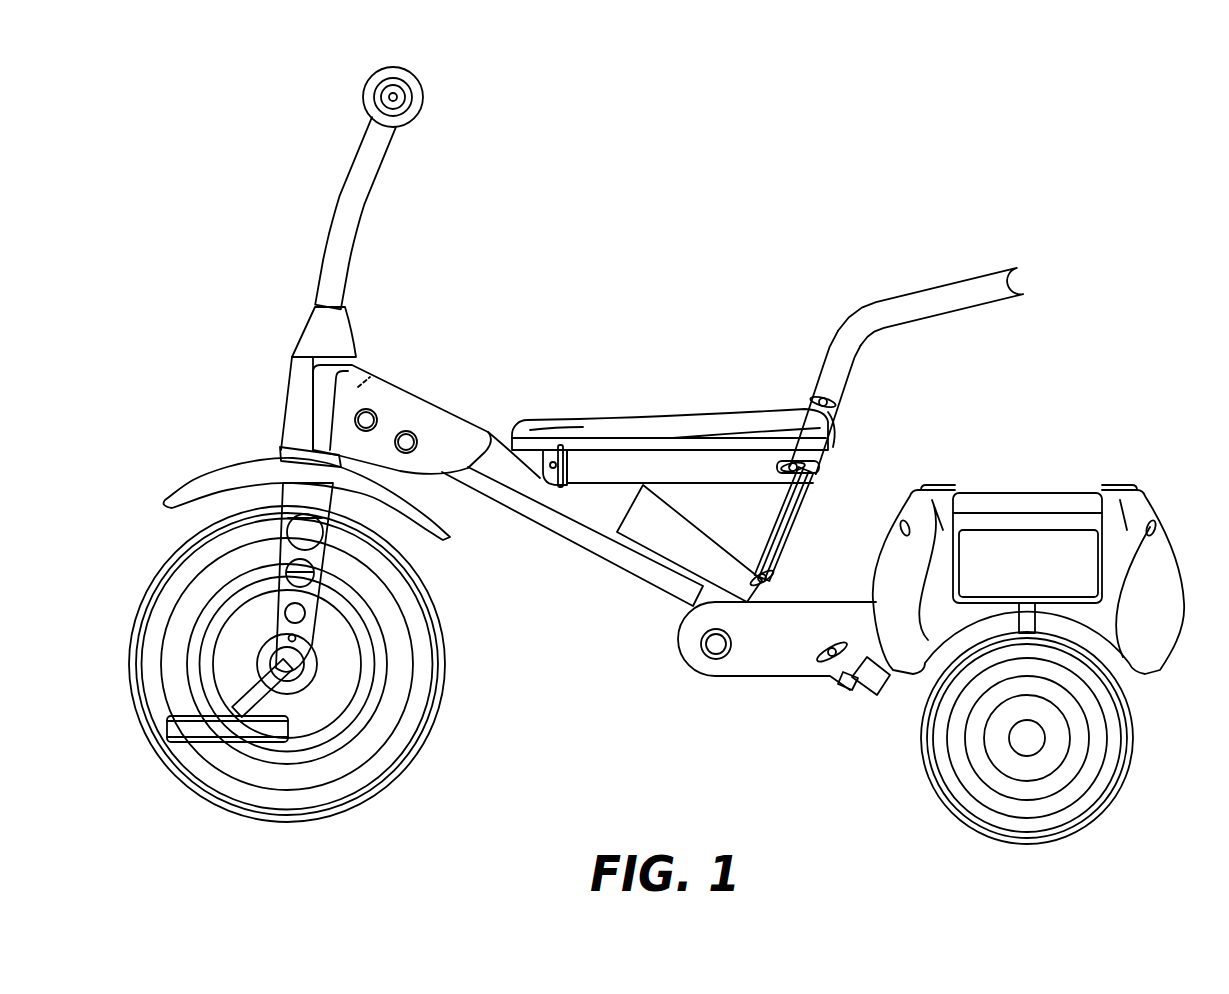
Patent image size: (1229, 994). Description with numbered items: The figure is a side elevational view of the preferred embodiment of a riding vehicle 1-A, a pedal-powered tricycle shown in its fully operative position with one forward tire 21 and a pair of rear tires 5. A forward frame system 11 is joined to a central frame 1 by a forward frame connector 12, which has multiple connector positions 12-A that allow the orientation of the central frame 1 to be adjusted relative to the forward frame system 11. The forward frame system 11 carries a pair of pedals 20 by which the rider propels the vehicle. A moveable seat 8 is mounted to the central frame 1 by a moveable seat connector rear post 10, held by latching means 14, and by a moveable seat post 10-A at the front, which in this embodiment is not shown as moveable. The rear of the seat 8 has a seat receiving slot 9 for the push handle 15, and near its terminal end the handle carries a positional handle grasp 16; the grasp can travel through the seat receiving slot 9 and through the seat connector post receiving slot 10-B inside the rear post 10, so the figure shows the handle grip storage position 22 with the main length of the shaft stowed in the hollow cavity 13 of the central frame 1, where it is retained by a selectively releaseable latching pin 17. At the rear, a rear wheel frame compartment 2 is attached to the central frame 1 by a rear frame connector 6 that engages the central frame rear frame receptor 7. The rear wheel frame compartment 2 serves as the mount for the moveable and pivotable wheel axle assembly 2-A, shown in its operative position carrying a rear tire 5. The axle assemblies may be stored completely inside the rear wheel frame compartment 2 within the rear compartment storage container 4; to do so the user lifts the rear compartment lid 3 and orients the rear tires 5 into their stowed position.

The central frame 1 is at (505, 495).
The riding vehicle 1-A is at (487, 634).
The rear wheel frame compartment 2 is at (1165, 634).
The moveable and pivotable wheel axle assembly 2-A is at (1072, 545).
The rear compartment lid 3 is at (1033, 492).
The rear compartment storage container 4 is at (1128, 565).
The rear tire 5 is at (1107, 803).
The rear frame connector 6 is at (767, 662).
The central frame rear frame receptor 7 is at (698, 660).
The moveable seat 8 is at (668, 425).
The seat receiving slot 9 is at (818, 437).
The moveable seat connector rear post 10 is at (803, 522).
The moveable seat post 10-A is at (618, 507).
The seat connector post receiving slot 10-B is at (835, 462).
The forward frame system 11 is at (302, 392).
The forward frame connector 12 is at (392, 432).
The connector multiple connector positions 12-A is at (366, 418).
The hollow cavity central frame 13 is at (843, 677).
The latching means 14 is at (800, 398).
The handle 15 is at (870, 692).
The positional handle grasp 16 is at (867, 312).
The selectively releaseable latching pin 17 is at (585, 465).
The pedal 20 is at (190, 728).
The forward tire 21 is at (367, 747).
The handle grip storage position 22 is at (848, 352).